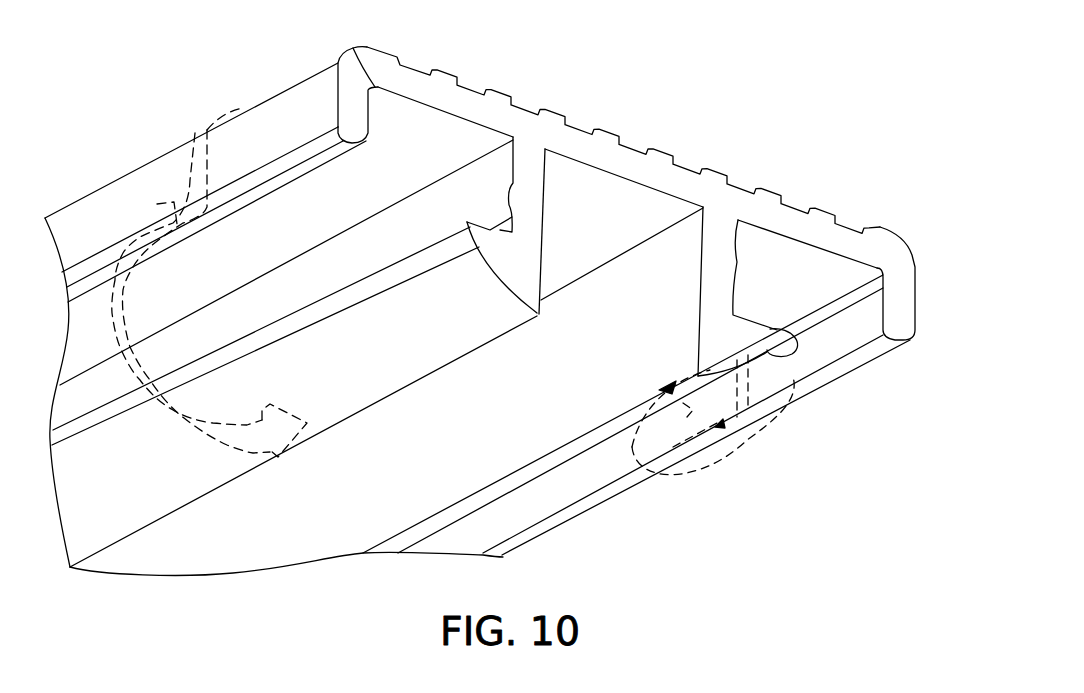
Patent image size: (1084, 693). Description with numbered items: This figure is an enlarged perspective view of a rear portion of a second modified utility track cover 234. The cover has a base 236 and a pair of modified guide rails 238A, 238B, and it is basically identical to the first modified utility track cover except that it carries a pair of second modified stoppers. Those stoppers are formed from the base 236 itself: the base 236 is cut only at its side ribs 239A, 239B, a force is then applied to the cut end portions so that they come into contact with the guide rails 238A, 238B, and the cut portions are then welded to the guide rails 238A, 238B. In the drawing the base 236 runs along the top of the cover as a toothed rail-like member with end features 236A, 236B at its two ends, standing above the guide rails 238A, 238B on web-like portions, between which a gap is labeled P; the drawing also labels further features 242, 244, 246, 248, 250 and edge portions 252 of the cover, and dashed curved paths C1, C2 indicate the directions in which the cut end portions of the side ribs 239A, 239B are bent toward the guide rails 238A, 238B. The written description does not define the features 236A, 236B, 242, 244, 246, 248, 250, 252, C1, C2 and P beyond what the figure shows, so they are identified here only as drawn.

The second modified utility track cover 234 is at (752, 68).
The base 236 is at (735, 183).
The first end of rail 236A is at (353, 48).
The second end of rail 236B is at (909, 260).
The modified guide rail 238A is at (233, 452).
The modified guide rail 238B is at (337, 516).
The side rib 239A is at (137, 197).
The side rib 239B is at (915, 303).
The rail teeth 242 is at (628, 147).
The first support web 244 is at (546, 208).
The first curved surface 246 is at (493, 275).
The second support web 248 is at (700, 287).
The second curved surface 250 is at (802, 328).
The edge 252 is at (487, 343).
The first strap path C1 is at (209, 265).
The second strap path C2 is at (774, 400).
The gap P is at (582, 275).